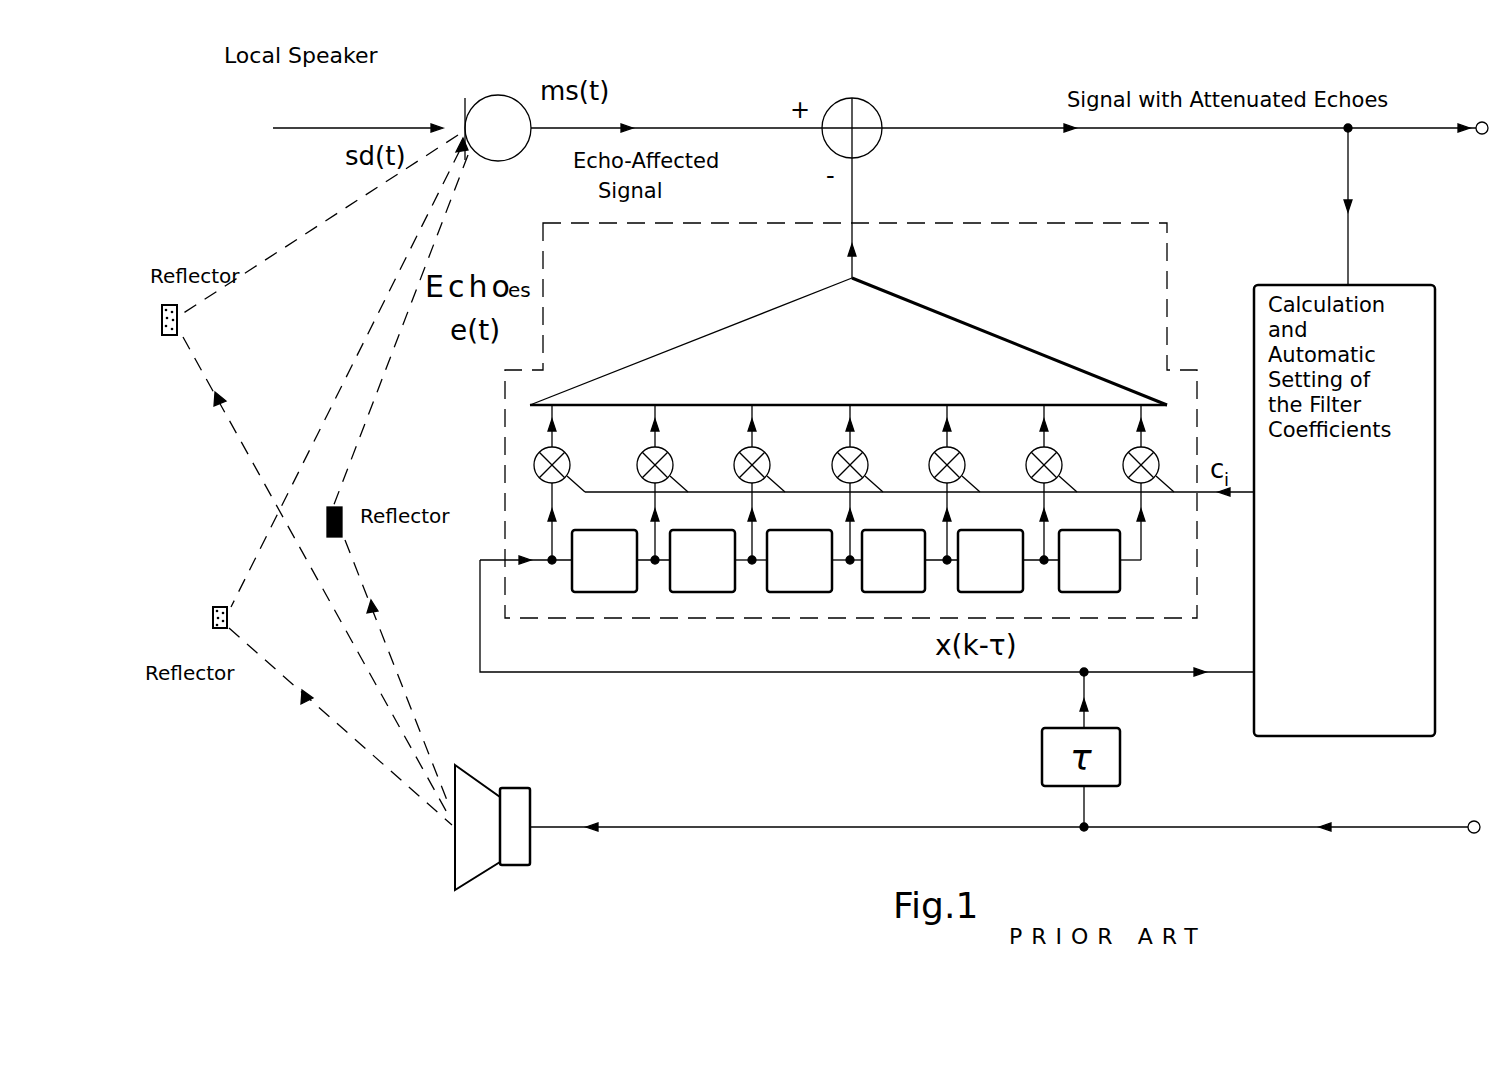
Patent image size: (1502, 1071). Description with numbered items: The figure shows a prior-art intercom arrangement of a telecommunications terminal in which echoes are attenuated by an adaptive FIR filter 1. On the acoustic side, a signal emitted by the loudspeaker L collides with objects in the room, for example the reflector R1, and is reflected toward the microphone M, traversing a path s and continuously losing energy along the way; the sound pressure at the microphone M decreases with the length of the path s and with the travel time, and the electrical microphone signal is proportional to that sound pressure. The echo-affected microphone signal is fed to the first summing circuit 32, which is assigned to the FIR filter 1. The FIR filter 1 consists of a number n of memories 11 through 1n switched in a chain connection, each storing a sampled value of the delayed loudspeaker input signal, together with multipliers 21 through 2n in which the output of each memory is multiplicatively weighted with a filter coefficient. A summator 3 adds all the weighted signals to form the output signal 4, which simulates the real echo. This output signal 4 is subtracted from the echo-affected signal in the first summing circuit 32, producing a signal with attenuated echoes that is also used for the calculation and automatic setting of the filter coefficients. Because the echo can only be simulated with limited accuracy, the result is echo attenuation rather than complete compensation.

The FIR filter 1 is at (1167, 272).
The summator 3 is at (978, 324).
The output signal 4 is at (852, 191).
The memory 11 is at (604, 561).
The memory 1n is at (1089, 561).
The multiplier 21 is at (570, 482).
The multiplier 2n is at (1153, 482).
The first summing circuit 32 is at (873, 110).
The microphone M is at (512, 74).
The loudspeaker L is at (478, 785).
The reflector R1 is at (334, 507).
The path s is at (384, 374).